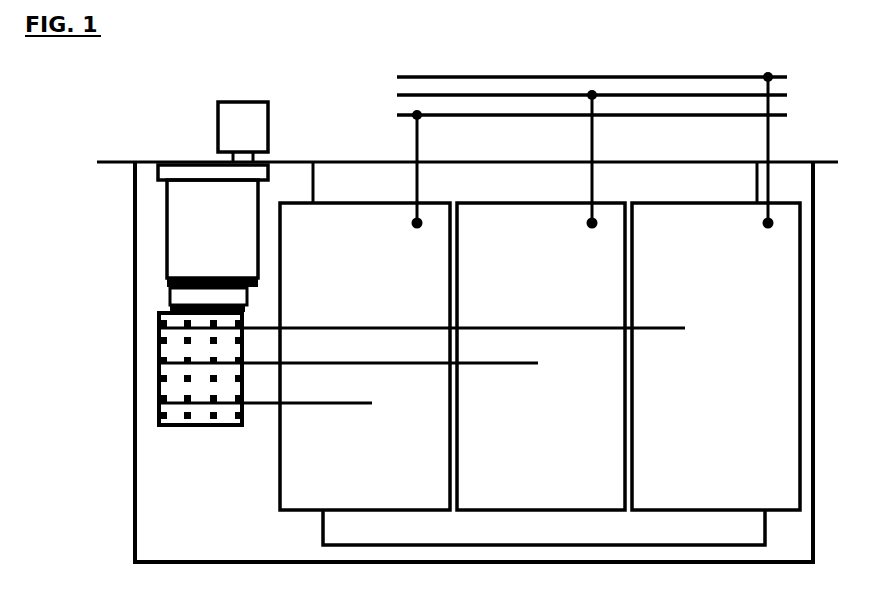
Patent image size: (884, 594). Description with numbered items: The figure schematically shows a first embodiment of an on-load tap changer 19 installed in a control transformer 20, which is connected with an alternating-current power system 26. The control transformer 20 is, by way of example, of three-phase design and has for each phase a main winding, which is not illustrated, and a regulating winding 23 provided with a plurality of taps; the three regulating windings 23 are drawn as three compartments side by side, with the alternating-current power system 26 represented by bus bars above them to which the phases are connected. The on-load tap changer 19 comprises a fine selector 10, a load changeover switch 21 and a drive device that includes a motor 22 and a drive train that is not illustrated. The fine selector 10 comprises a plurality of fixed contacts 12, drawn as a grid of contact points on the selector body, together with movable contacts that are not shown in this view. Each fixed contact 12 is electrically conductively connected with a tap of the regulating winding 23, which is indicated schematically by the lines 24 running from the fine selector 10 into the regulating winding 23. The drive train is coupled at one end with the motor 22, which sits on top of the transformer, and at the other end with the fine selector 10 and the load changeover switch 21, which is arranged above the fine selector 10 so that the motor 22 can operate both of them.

The fine selector 10 is at (158, 398).
The fixed contacts 12 is at (187, 341).
The on-load tap changer 19 is at (162, 146).
The control transformer 20 is at (788, 136).
The load changeover switch 21 is at (201, 243).
The motor 22 is at (231, 140).
The regulating winding 23 is at (371, 491).
The lines 24 is at (345, 401).
The alternating-current power system 26 is at (390, 95).